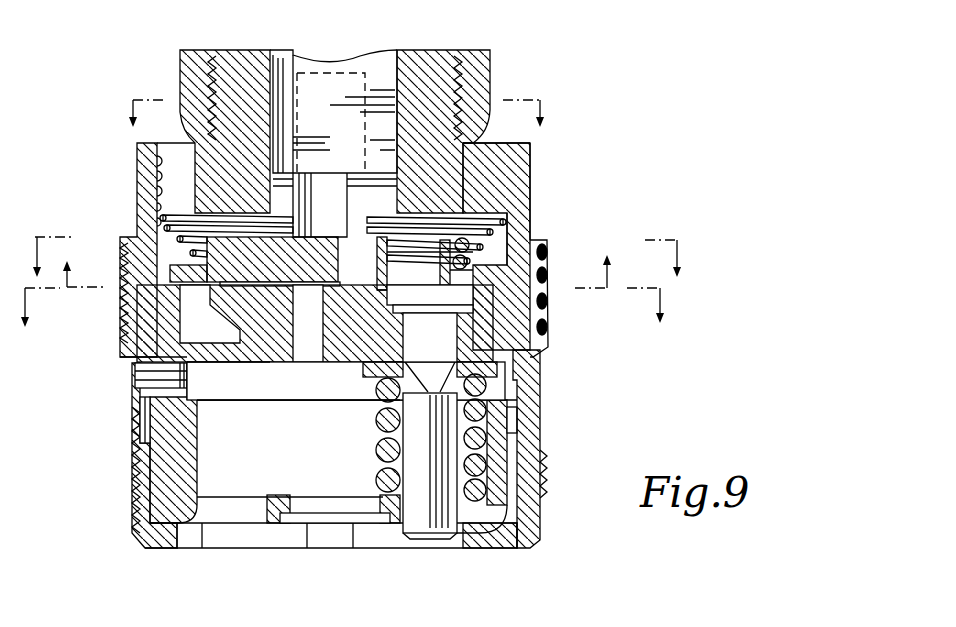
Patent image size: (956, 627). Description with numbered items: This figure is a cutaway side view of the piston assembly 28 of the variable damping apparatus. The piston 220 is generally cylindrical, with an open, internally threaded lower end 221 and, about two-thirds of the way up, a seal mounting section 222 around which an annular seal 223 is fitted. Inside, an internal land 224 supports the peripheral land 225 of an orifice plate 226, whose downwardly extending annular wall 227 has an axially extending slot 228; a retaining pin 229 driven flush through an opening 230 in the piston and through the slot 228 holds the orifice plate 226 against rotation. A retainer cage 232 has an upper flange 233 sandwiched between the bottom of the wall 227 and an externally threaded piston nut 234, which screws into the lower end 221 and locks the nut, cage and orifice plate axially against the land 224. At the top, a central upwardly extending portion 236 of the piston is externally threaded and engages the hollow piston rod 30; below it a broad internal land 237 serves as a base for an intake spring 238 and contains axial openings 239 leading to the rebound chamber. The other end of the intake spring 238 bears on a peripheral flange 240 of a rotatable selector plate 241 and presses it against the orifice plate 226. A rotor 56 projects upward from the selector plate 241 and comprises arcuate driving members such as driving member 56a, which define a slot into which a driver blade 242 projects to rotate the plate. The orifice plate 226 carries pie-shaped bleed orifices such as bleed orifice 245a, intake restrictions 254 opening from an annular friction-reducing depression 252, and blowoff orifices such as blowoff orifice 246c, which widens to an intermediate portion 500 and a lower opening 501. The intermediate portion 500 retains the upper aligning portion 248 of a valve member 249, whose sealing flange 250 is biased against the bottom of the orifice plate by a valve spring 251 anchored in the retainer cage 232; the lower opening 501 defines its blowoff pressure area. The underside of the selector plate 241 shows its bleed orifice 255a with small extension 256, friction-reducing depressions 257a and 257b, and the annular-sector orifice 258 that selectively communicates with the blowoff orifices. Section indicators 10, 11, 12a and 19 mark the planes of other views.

The hollow piston rod 30 is at (480, 78).
The driver blade 242 is at (313, 93).
The driving member 56a is at (287, 183).
The rotor 56 is at (350, 187).
The intake spring 238 is at (143, 188).
The axial openings 239 is at (153, 167).
The peripheral land 225 is at (137, 237).
The internal land 224 is at (148, 348).
The central axially upwardly extending portion 236 is at (480, 127).
The broad internal land 237 is at (531, 181).
The piston assembly 28 is at (550, 192).
The annular seal 223 is at (540, 338).
The orifice 258 is at (548, 260).
The depression 257a is at (548, 283).
The intermediate portion 500 is at (548, 305).
The lower opening 501 is at (548, 322).
The selector plate 241 is at (231, 222).
The blowoff orifice 246c is at (405, 228).
The intake restrictions 254 is at (255, 261).
The peripheral flange 240 is at (500, 246).
The seal mounting section 222 is at (548, 247).
The small extension 256 is at (302, 326).
The depression 257b is at (240, 305).
The passage 255a is at (385, 300).
The piston 220 is at (552, 420).
The annular wall 227 is at (545, 378).
The retainer cage 232 is at (160, 503).
The upper flange 233 is at (143, 443).
The slot 228 is at (157, 399).
The piston nut 234 is at (165, 545).
The lower end 221 is at (540, 536).
The opening 230 is at (138, 371).
The retaining pin 229 is at (188, 388).
The upper aligning portion 248 is at (346, 382).
The pie-shaped orifice 245a is at (287, 330).
The orifice plate 226 is at (275, 367).
The annular depression 252 is at (447, 343).
The sealing flange 250 is at (375, 380).
The valve spring 251 is at (503, 441).
The valve member 249 is at (385, 468).
The section line 19 is at (335, 107).
The section line 12a is at (359, 239).
The section line 11 is at (348, 260).
The section line 10 is at (342, 310).